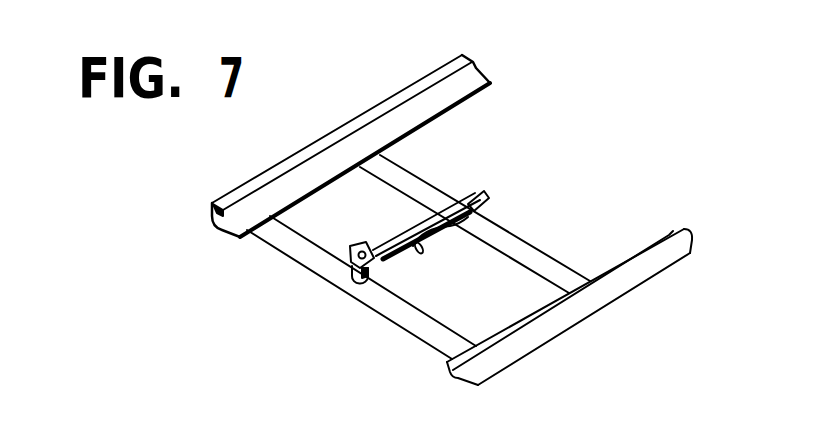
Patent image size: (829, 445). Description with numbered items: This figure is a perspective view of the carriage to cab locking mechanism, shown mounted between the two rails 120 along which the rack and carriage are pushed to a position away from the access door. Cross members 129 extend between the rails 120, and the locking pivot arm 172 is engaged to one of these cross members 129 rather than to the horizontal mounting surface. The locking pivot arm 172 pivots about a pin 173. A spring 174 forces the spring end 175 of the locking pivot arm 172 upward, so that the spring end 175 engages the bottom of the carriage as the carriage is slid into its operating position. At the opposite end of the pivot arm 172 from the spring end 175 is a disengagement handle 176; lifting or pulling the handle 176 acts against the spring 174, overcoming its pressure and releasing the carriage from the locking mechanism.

The rails 120 is at (387, 97).
The cross members 129 is at (523, 255).
The locking pivot arm 172 is at (455, 210).
The pin 173 is at (428, 254).
The spring 174 is at (351, 270).
The spring end 175 is at (353, 245).
The disengagement handle 176 is at (494, 191).